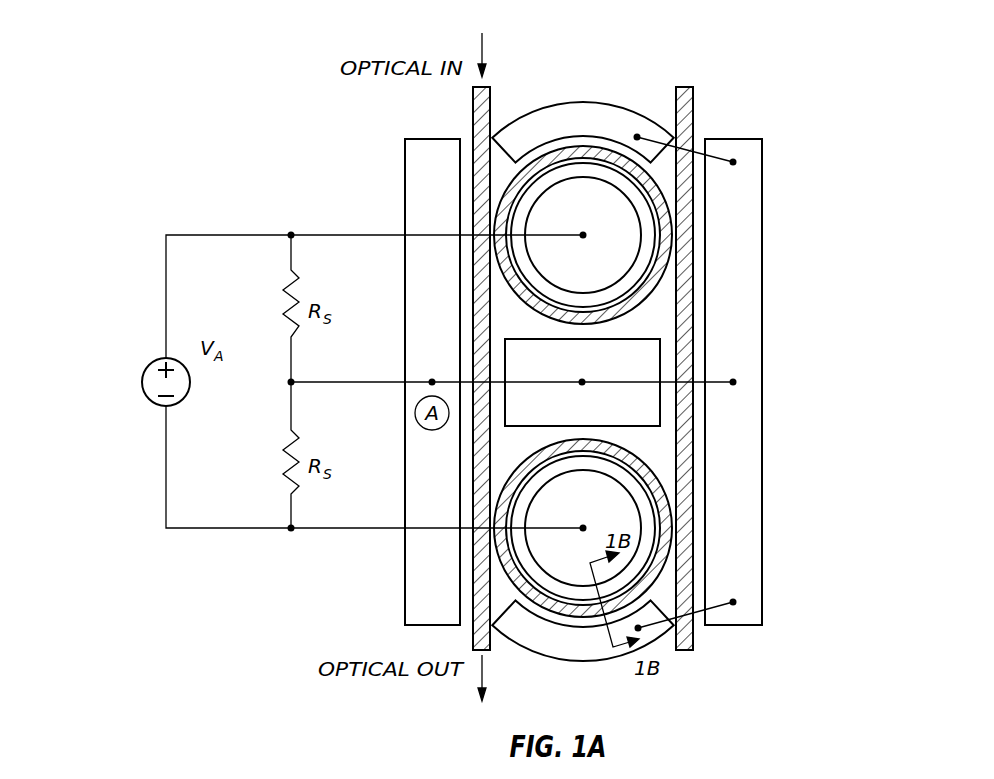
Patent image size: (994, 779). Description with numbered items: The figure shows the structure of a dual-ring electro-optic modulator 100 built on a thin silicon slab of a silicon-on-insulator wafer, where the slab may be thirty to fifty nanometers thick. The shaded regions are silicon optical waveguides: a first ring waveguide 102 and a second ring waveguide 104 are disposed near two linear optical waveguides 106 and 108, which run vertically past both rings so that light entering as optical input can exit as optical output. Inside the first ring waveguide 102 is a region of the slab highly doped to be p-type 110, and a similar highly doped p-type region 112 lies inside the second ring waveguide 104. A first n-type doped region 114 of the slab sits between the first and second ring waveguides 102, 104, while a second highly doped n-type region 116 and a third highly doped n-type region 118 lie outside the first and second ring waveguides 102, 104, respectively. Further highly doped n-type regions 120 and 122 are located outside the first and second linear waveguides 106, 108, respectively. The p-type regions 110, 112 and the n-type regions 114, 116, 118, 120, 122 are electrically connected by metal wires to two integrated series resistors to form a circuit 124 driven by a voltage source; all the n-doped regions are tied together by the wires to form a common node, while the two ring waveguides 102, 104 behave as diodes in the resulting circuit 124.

The photodetector device 100 is at (803, 41).
The first ring waveguide 102 is at (668, 206).
The second ring waveguide 104 is at (640, 473).
The first linear optical waveguide 106 is at (683, 102).
The second linear optical waveguide 108 is at (480, 110).
The p-type doped region 110 is at (618, 246).
The p-type doped region 112 is at (623, 508).
The first n-type doped region 114 is at (643, 362).
The second highly doped n-type region 116 is at (492, 137).
The third highly doped n-type region 118 is at (510, 614).
The third highly doped n-type region 120 is at (745, 545).
The fourth highly doped n-type region 122 is at (425, 554).
The circuit 124 is at (165, 435).